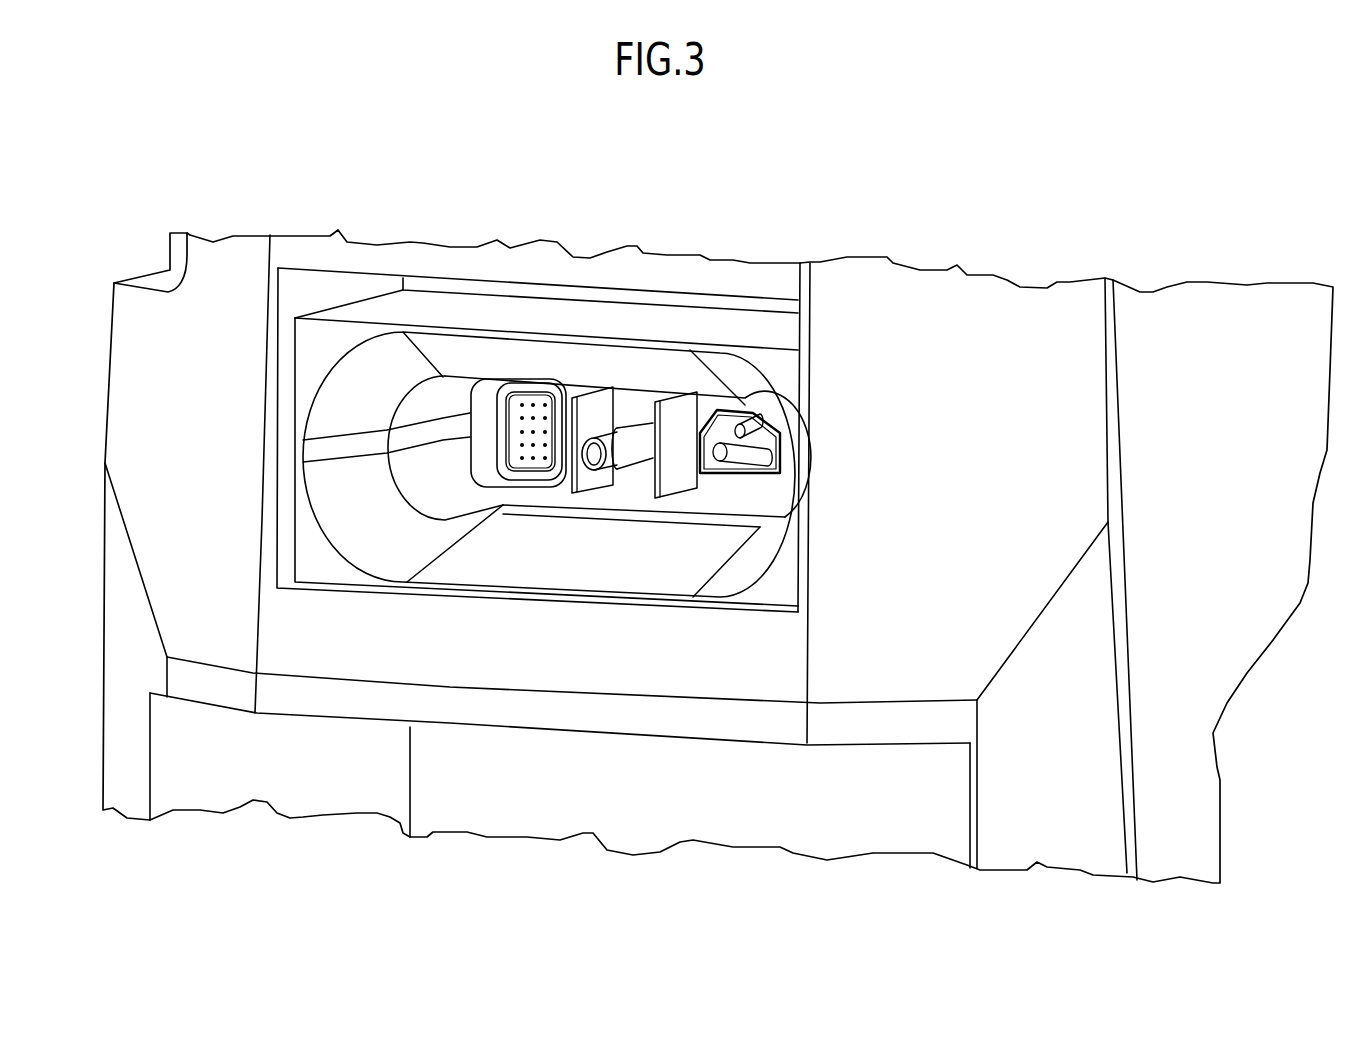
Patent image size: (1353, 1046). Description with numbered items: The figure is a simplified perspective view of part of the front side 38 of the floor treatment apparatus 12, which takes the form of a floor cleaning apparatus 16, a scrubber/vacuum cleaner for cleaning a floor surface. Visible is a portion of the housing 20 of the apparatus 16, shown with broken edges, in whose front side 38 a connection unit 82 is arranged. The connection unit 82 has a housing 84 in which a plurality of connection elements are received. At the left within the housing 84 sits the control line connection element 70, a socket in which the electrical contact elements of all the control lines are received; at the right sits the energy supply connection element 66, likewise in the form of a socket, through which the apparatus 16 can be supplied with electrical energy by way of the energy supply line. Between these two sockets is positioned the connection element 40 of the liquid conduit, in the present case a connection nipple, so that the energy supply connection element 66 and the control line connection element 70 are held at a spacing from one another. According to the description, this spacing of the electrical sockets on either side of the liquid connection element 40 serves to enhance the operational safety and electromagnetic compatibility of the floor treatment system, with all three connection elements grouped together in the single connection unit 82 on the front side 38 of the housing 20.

The floor treatment apparatus 12 is at (718, 496).
The floor cleaning apparatus 16 is at (606, 494).
The housing 20 is at (1091, 542).
The front side 38 is at (563, 736).
The connection element 40 is at (618, 327).
The energy supply connection element 66 is at (740, 328).
The control line connection element 70 is at (518, 330).
The connection unit 82 is at (549, 385).
The housing 84 is at (557, 350).